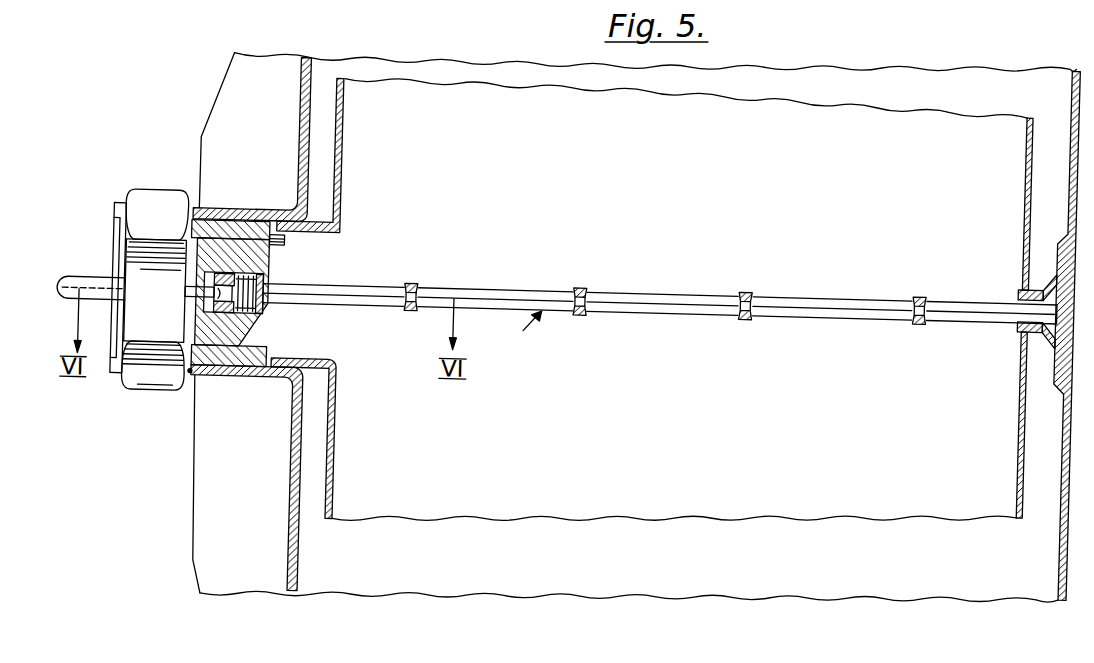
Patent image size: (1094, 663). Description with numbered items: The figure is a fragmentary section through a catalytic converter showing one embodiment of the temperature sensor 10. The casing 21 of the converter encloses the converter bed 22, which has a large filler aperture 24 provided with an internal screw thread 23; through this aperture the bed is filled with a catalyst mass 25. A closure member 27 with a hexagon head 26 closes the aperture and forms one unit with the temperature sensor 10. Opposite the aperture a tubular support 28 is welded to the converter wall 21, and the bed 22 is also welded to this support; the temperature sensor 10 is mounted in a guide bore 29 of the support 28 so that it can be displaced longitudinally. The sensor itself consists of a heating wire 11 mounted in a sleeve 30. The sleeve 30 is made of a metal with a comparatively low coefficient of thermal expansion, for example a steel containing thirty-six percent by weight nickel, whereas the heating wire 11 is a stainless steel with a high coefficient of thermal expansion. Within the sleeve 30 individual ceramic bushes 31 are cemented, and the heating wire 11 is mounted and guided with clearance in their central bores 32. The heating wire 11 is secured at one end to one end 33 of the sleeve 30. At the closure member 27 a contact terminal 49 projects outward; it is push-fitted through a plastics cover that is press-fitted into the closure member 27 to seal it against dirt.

The temperature sensor 10 is at (521, 337).
The heating wire 11 is at (672, 304).
The casing 21 is at (295, 138).
The converter bed 22 is at (339, 178).
The internal screw thread 23 is at (268, 252).
The filler aperture 24 is at (332, 356).
The catalyst mass 25 is at (361, 521).
The hexagon head 26 is at (157, 204).
The closure member 27 is at (192, 388).
The tubular support 28 is at (1056, 357).
The guide bore 29 is at (1016, 317).
The sleeve 30 is at (855, 293).
The ceramic bushes 31 is at (578, 316).
The central bores 32 is at (586, 289).
The end of the sleeve 33 is at (1042, 292).
The contact terminal 49 is at (86, 292).